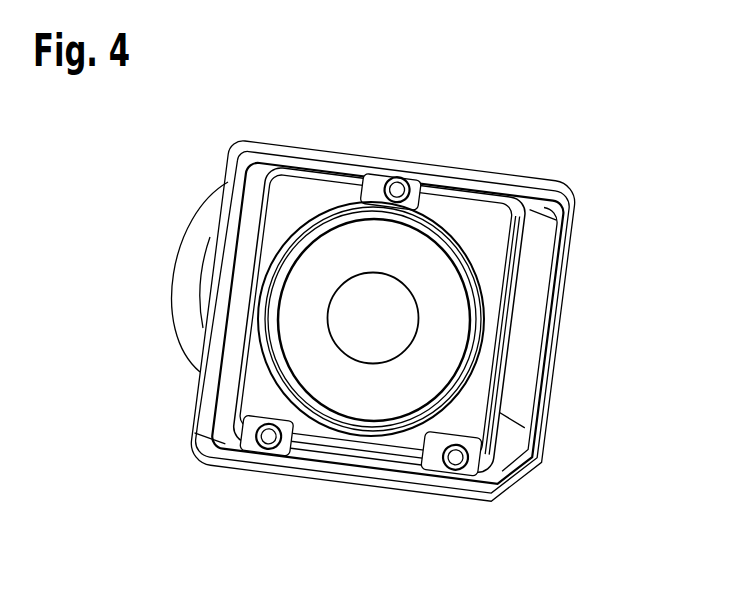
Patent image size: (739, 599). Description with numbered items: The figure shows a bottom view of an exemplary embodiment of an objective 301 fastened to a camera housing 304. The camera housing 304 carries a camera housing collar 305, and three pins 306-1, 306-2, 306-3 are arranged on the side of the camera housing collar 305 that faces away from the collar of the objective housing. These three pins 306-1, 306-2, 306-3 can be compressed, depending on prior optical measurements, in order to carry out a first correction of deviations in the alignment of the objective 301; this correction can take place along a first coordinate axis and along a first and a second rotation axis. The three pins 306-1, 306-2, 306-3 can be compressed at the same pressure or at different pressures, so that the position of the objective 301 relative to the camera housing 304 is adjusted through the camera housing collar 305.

The objective 301 is at (440, 337).
The camera housing 304 is at (208, 401).
The camera housing collar 305 is at (481, 231).
The pin 306-1 is at (272, 442).
The pin 306-2 is at (457, 462).
The pin 306-3 is at (398, 188).